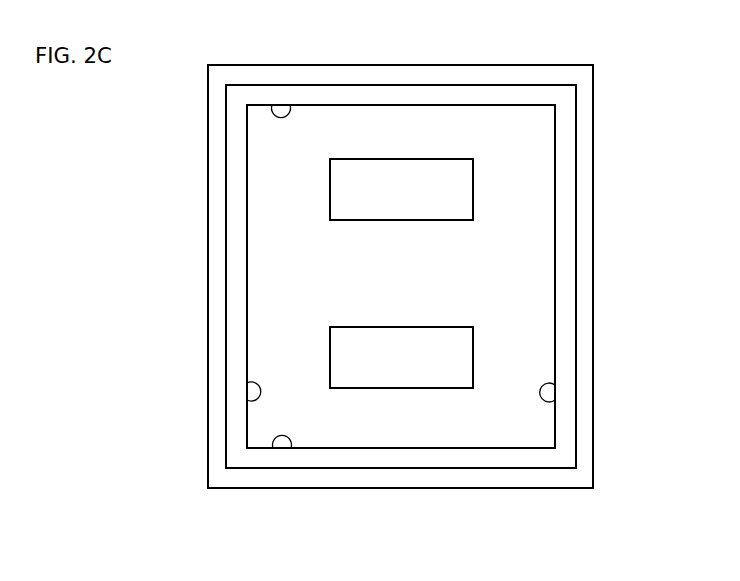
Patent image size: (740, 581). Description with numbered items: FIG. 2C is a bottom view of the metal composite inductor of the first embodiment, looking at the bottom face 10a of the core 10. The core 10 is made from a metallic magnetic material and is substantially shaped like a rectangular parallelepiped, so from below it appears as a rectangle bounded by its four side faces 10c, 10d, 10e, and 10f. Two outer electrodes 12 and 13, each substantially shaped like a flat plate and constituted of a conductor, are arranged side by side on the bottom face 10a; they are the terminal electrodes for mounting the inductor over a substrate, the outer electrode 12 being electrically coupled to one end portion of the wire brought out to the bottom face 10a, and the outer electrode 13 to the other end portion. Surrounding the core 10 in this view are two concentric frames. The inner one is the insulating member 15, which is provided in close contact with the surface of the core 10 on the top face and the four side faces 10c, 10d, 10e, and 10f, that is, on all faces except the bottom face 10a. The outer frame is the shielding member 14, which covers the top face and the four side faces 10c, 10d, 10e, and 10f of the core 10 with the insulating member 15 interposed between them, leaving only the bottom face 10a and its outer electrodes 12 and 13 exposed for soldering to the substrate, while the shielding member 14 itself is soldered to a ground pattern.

The core 10 is at (317, 103).
The bottom face 10a is at (270, 217).
The side face 10c is at (275, 108).
The side face 10d is at (273, 447).
The side face 10e is at (250, 386).
The side face 10f is at (556, 389).
The outer electrode 12 is at (473, 187).
The outer electrode 13 is at (473, 350).
The shielding member 14 is at (481, 65).
The insulating member 15 is at (432, 83).